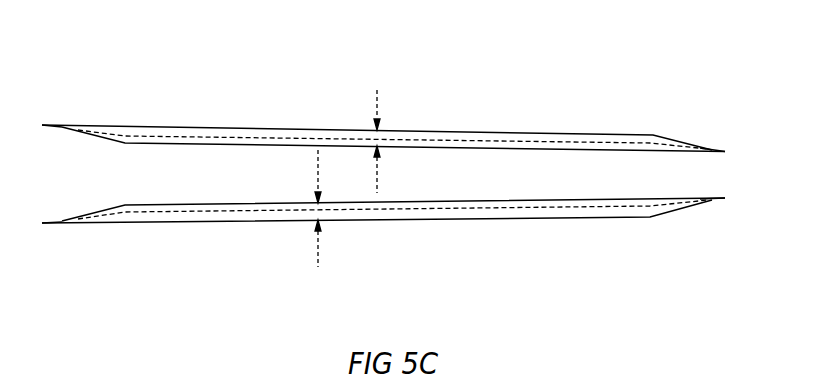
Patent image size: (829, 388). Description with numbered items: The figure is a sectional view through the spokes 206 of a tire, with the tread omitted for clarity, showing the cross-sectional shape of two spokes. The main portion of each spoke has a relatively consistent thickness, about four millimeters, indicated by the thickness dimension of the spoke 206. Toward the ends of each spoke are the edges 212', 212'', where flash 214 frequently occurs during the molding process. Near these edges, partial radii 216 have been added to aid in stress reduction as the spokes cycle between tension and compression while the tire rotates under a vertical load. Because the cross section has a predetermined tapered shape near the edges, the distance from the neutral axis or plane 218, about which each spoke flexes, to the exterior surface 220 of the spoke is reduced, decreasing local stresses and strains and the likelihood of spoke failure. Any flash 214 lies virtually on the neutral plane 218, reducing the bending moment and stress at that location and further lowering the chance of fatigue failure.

The edge of spoke 212' is at (211, 73).
The edge of spoke 212'' is at (558, 97).
The flash 214 is at (47, 124).
The partial radii 216 is at (62, 131).
The neutral axis or plane 218 is at (505, 140).
The exterior surface 220 is at (96, 137).
The spoke 206 is at (342, 270).